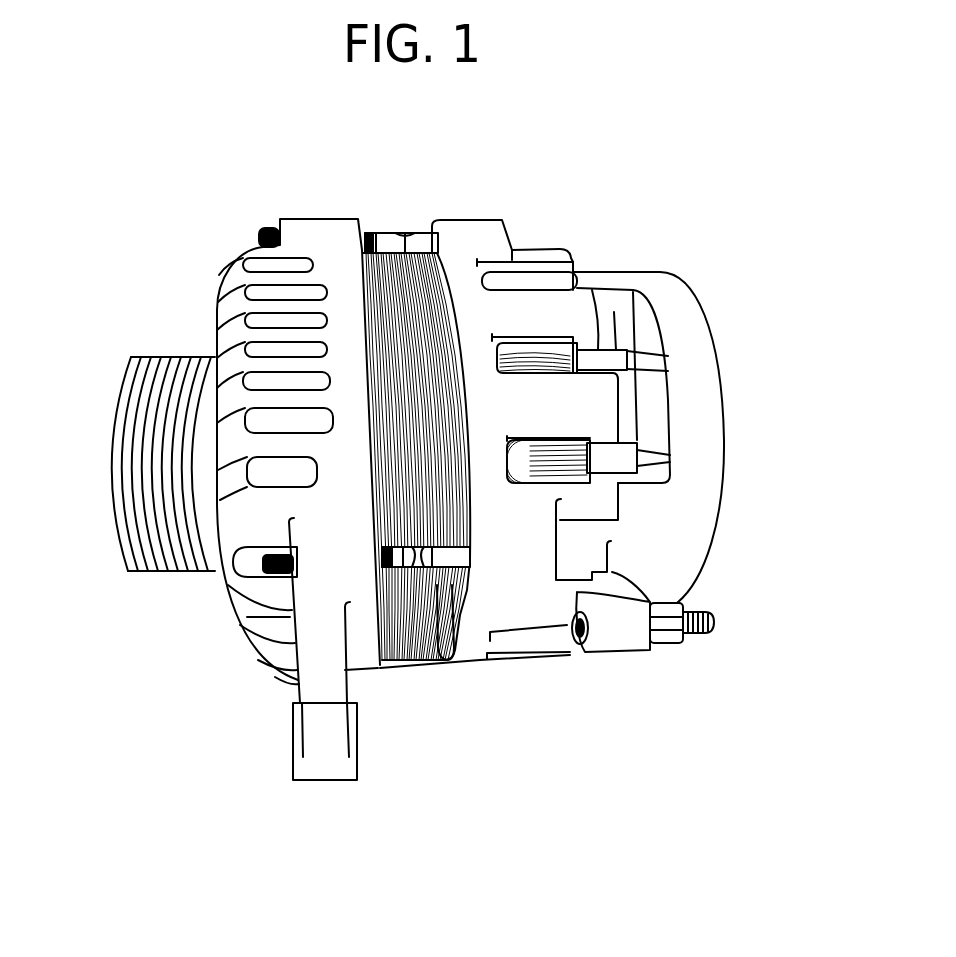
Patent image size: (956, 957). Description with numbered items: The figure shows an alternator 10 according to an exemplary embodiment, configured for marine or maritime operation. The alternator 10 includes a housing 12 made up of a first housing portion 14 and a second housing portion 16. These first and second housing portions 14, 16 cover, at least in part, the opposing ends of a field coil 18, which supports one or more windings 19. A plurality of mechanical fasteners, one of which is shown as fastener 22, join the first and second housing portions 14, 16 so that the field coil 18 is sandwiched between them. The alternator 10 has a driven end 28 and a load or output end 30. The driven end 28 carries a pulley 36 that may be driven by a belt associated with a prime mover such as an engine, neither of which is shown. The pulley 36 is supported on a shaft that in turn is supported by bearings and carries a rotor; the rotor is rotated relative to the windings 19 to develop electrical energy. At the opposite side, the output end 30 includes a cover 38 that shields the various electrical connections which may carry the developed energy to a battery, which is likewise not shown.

The alternator 10 is at (436, 461).
The housing 12 is at (262, 693).
The first housing portion 14 is at (311, 232).
The second housing portion 16 is at (473, 235).
The field coil 18 is at (413, 328).
The windings 19 is at (547, 472).
The mechanical fastener 22 is at (449, 582).
The driven end 28 is at (143, 595).
The output end 30 is at (623, 236).
The pulley 36 is at (178, 357).
The cover 38 is at (713, 548).